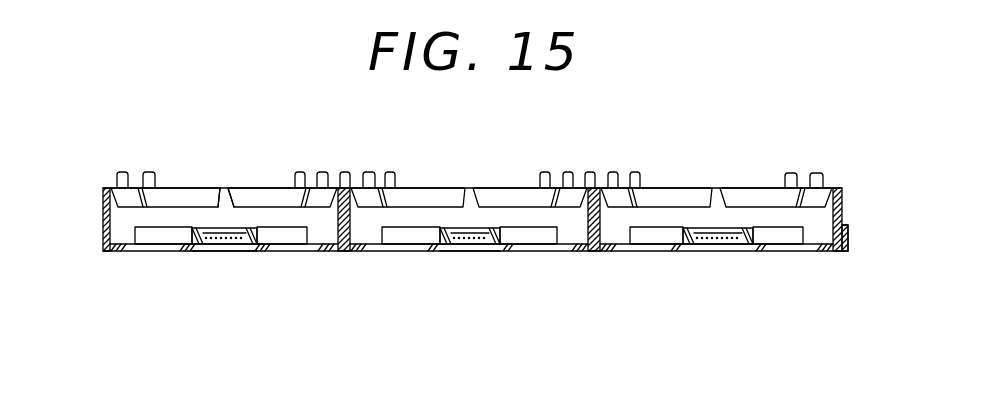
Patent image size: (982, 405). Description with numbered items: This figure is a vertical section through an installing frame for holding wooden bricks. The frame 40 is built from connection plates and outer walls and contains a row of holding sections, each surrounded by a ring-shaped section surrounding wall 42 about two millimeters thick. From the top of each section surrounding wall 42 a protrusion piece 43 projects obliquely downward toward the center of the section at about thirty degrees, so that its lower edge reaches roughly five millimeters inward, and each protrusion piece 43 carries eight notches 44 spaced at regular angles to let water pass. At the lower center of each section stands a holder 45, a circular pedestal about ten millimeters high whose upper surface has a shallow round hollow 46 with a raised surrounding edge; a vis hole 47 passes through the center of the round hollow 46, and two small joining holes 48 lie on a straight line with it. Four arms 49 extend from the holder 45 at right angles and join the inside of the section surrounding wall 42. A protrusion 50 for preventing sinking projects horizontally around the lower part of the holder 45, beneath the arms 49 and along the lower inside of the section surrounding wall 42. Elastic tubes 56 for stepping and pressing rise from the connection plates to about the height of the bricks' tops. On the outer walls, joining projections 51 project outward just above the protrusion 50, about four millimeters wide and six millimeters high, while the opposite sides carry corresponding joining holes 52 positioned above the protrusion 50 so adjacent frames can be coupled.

The frame 40 is at (282, 254).
The section surrounding wall 42 is at (98, 196).
The protrusion piece 43 is at (190, 196).
The notch 44 is at (224, 198).
The holder 45 is at (214, 252).
The round hollow 46 is at (219, 229).
The vis hole 47 is at (468, 235).
The joining hole 48 is at (238, 252).
The arm 49 is at (410, 252).
The protrusion for preventing sinking 50 is at (336, 253).
The joining projection 51 is at (850, 252).
The joining hole 52 is at (104, 251).
The tube for stepping and pressing 56 is at (150, 172).